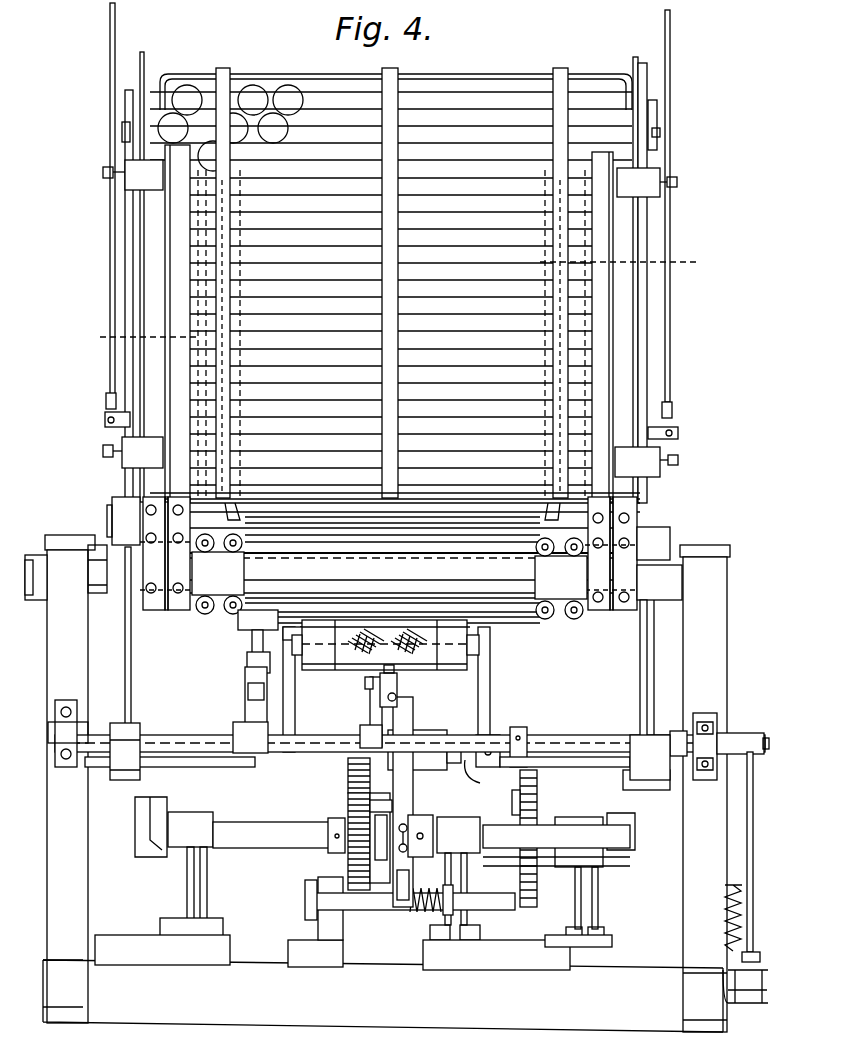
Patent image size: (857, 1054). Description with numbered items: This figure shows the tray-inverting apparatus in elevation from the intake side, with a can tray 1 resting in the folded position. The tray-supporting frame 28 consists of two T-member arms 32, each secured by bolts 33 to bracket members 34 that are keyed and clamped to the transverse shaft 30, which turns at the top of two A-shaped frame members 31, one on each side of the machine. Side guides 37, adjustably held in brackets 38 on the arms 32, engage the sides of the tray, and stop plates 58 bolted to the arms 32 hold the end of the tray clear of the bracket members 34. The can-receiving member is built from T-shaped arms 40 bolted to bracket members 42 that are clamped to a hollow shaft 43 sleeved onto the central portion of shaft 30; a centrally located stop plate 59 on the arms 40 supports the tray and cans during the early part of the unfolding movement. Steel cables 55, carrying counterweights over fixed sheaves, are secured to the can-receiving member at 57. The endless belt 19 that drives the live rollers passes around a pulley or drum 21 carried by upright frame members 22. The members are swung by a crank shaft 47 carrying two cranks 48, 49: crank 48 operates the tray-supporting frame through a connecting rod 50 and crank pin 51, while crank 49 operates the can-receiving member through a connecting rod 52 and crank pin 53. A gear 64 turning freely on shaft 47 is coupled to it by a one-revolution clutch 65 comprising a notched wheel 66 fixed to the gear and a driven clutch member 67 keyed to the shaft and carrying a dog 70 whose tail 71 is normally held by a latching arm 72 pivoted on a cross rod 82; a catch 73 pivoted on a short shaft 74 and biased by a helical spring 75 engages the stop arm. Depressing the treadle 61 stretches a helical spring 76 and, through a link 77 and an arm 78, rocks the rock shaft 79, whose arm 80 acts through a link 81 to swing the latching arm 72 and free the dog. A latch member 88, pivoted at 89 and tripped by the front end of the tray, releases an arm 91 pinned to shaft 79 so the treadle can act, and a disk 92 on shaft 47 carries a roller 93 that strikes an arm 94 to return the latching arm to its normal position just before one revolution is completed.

The can tray 1 is at (505, 75).
The endless belt 19 is at (370, 626).
The pulley or drum 21 is at (447, 664).
The upright frame members 22 is at (295, 690).
The tray-supporting frame 28 is at (625, 395).
The transverse shaft 30 is at (100, 548).
The A-shaped frame members 31 is at (58, 636).
The arms 32 is at (152, 241).
The bolts 33 is at (153, 592).
The bracket members 34 is at (167, 612).
The side guides 37 is at (140, 298).
The brackets 38 is at (128, 170).
The arms 40 is at (388, 291).
The bracket members 42 is at (230, 575).
The hollow shaft 43 is at (455, 588).
The crank shaft 47 is at (246, 825).
The crank 48 is at (137, 807).
The crank 49 is at (633, 820).
The connecting rod 50 is at (130, 645).
The crank pin 51 is at (110, 512).
The connecting rod 52 is at (642, 665).
The crank pin 53 is at (672, 540).
The steel cables 55 is at (658, 278).
The cable attachment 57 is at (105, 420).
The stop plates 58 is at (233, 518).
The stop plate 59 is at (432, 505).
The treadle 61 is at (760, 988).
The gear 64 is at (348, 768).
The one-revolution clutch 65 is at (356, 935).
The notched wheel 66 is at (348, 788).
The driven clutch member 67 is at (432, 822).
The dog 70 is at (378, 843).
The tail 71 is at (372, 806).
The latching arm 72 is at (425, 740).
The catch 73 is at (413, 810).
The short shaft 74 is at (470, 890).
The helical spring 75 is at (428, 912).
The helical spring 76 is at (726, 914).
The link 77 is at (753, 828).
The arm 78 is at (735, 732).
The rock shaft 79 is at (308, 738).
The arm 80 is at (372, 704).
The link 81 is at (398, 690).
The cross rod 82 is at (481, 770).
The latch member 88 is at (270, 612).
The pivot 89 is at (247, 660).
The arm 91 is at (246, 704).
The disk 92 is at (598, 891).
The roller 93 is at (514, 800).
The arm 94 is at (520, 866).